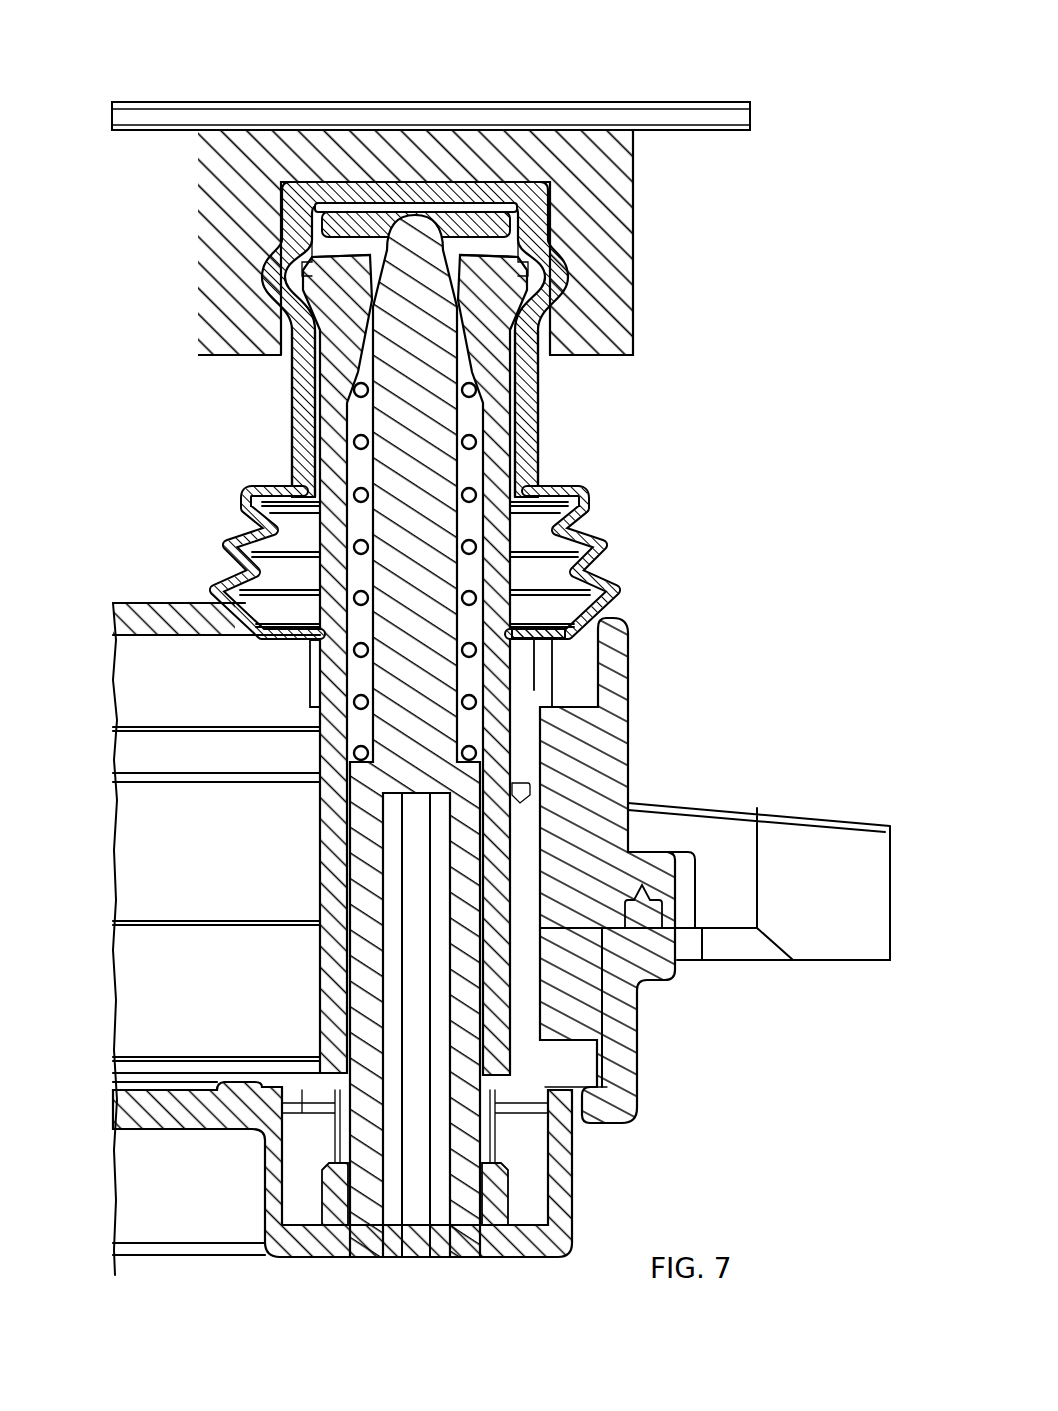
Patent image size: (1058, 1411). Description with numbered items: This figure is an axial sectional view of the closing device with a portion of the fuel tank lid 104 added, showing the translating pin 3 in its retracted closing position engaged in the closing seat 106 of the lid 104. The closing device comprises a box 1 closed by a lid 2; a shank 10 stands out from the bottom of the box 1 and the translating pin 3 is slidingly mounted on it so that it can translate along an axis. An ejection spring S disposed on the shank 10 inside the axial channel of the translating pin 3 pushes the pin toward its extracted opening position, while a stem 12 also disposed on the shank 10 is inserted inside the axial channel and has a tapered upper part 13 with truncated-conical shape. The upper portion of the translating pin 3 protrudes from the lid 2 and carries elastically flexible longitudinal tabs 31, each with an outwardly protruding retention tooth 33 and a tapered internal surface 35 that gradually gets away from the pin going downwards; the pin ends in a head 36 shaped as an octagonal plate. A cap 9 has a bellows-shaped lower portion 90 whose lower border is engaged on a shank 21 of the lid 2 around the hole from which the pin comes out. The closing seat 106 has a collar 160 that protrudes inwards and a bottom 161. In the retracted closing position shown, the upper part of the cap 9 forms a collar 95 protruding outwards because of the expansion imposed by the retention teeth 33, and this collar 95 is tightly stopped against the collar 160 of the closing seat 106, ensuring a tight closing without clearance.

The box 1 is at (656, 1110).
The lid 2 is at (646, 722).
The translating pin 3 is at (306, 950).
The cap 9 is at (558, 410).
The shank 10 is at (365, 1000).
The stem 12 is at (423, 672).
The tapered upper part 13 is at (445, 195).
The shank of the lid 21 is at (150, 618).
The longitudinal tabs 31 is at (335, 427).
The retention tooth 33 is at (268, 306).
The tapered internal surface 35 is at (347, 190).
The head 36 is at (535, 213).
The bellows-shaped lower portion 90 is at (619, 546).
The collar 95 is at (262, 272).
The lid 104 is at (122, 104).
The closing seat 106 is at (620, 238).
The collar 160 is at (580, 345).
The bottom 161 is at (280, 204).
The ejection spring S is at (347, 533).